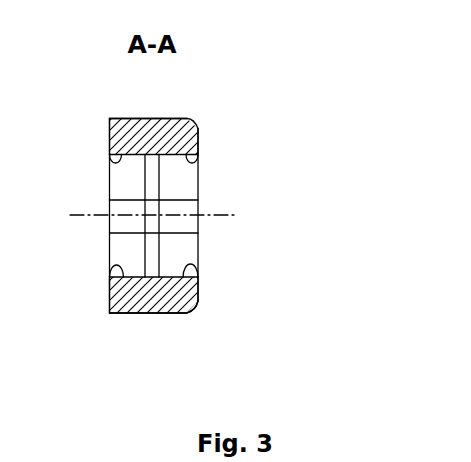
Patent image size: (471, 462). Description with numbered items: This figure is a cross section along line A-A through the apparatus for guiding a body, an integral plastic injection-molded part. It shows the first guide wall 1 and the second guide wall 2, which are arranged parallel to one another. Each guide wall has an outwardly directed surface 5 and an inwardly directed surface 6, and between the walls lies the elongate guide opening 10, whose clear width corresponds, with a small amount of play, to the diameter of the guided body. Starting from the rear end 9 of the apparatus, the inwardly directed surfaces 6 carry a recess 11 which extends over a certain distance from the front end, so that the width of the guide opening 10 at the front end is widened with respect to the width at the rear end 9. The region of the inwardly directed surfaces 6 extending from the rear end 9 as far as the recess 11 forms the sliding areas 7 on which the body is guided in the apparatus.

The first guide wall 1 is at (198, 127).
The second guide wall 2 is at (153, 285).
The outwardly directed surface 5 is at (117, 118).
The inwardly directed surface 6 is at (107, 158).
The sliding area 7 is at (203, 158).
The rear end 9 is at (200, 298).
The guide opening 10 is at (125, 215).
The recess 11 is at (150, 153).